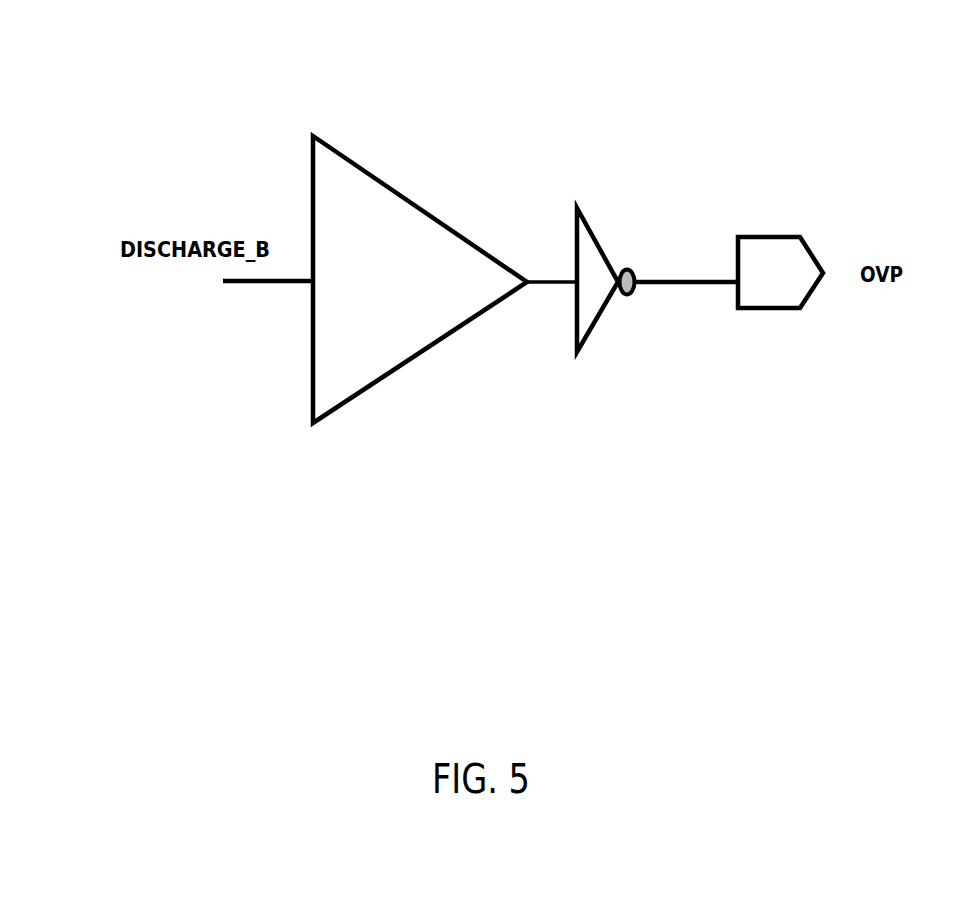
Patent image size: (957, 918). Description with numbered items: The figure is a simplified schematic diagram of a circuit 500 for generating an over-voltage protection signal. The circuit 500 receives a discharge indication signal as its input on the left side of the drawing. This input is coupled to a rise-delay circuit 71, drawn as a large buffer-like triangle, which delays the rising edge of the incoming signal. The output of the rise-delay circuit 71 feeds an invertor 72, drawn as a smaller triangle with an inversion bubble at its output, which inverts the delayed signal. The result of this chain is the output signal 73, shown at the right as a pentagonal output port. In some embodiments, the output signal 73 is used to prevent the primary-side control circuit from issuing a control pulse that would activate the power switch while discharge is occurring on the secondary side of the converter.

The circuit 500 is at (782, 59).
The rise-delay circuit 71 is at (423, 208).
The invertor 72 is at (597, 235).
The OVP signal 73 is at (767, 233).